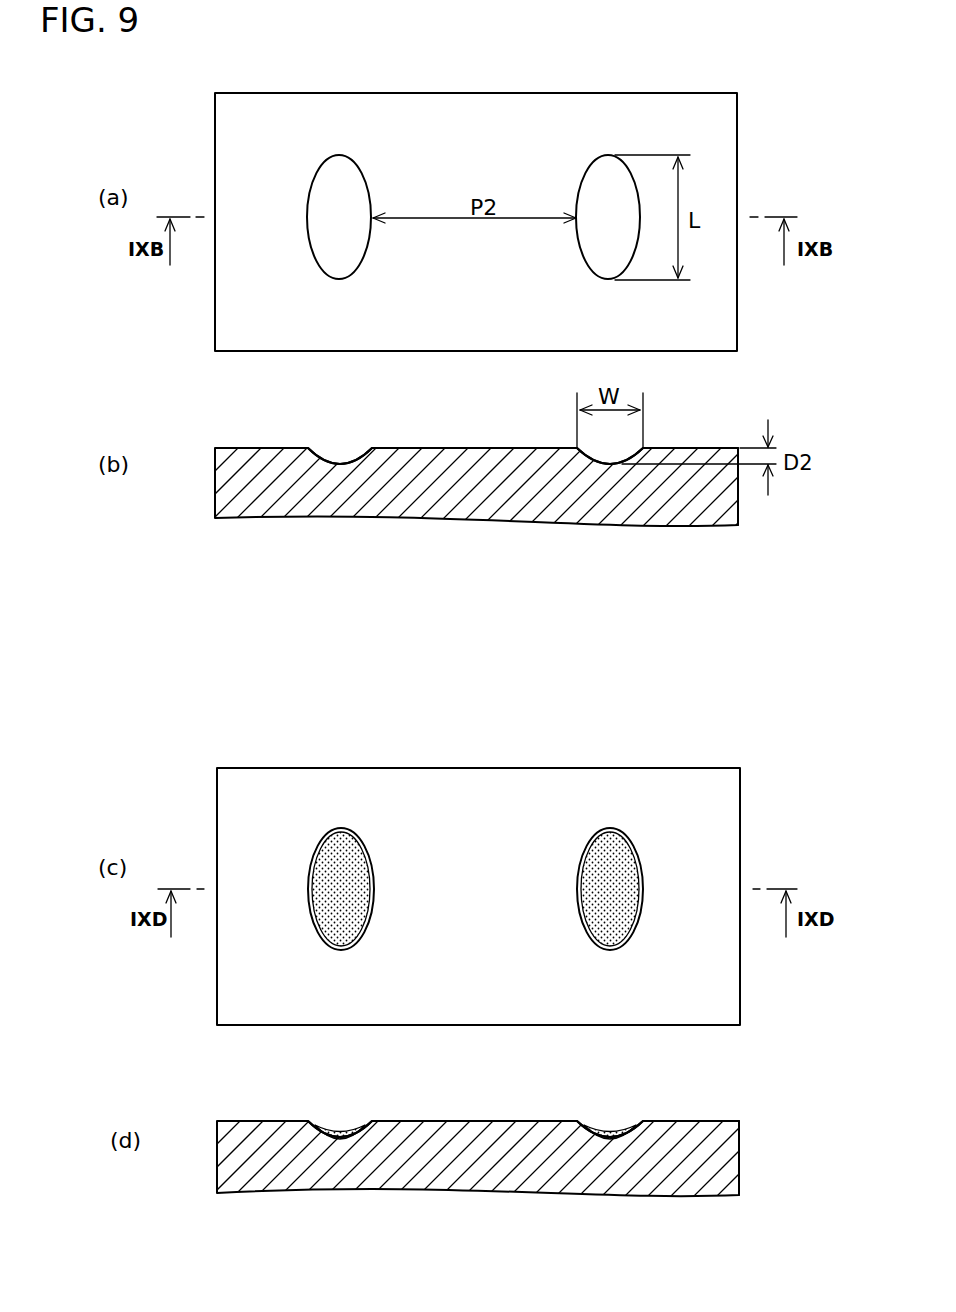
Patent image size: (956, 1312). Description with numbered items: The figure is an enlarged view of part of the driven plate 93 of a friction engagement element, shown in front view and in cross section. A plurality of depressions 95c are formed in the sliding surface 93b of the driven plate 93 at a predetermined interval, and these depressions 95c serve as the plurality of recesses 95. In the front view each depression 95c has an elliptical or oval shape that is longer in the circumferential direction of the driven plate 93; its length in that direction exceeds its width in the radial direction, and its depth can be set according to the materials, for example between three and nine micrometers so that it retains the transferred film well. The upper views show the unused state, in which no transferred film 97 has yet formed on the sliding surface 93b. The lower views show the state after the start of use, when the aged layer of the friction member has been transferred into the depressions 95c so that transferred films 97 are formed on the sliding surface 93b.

The driven plate 93 is at (739, 518).
The sliding surface 93b is at (500, 93).
The recesses 95 is at (518, 599).
The depression 95c is at (340, 158).
The transferred film 97 is at (341, 850).